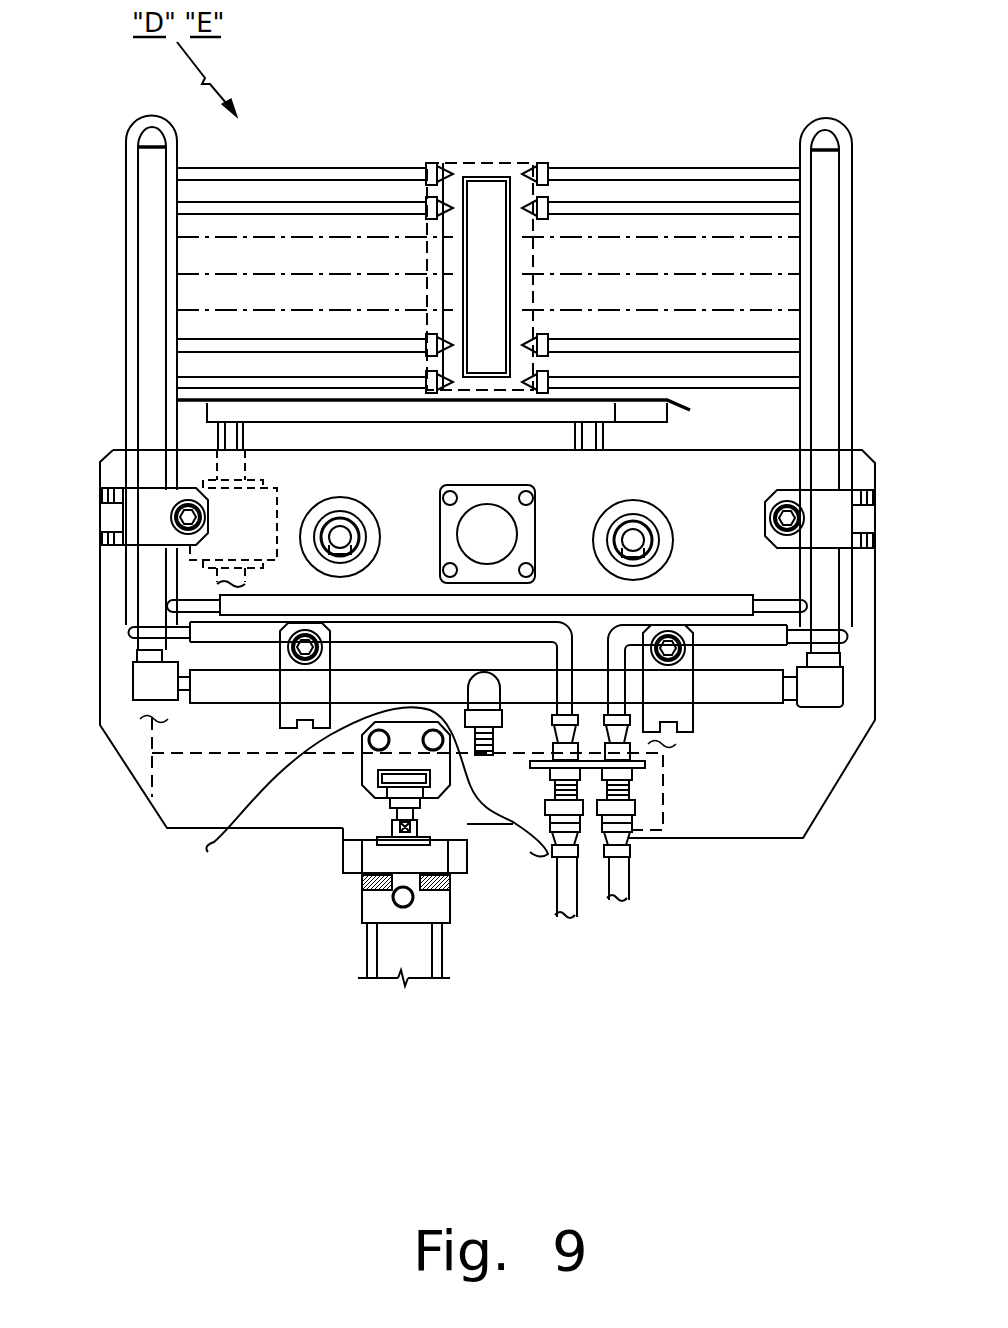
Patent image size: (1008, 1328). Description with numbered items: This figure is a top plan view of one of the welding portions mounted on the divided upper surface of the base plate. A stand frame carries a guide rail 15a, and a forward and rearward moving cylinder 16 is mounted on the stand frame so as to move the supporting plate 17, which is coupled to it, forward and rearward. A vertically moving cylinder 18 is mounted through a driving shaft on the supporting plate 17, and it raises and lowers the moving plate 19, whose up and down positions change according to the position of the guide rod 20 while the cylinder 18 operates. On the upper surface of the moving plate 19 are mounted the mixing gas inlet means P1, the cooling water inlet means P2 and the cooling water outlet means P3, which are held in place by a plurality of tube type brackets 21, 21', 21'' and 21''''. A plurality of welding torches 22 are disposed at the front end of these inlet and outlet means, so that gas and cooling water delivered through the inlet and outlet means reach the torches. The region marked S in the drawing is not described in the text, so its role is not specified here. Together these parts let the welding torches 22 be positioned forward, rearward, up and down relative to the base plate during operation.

The guide rail 15a is at (217, 442).
The forward and rearward moving cylinder 16 is at (415, 958).
The supporting plate 17 is at (328, 802).
The vertically moving cylinder 18 is at (447, 497).
The moving plate 19 is at (140, 758).
The guide rod 20 is at (635, 540).
The tube type bracket 21 is at (846, 563).
The tube type bracket 21' is at (778, 745).
The tube type bracket 21'' is at (267, 776).
The clamp block 21'''' is at (121, 581).
The welding torches 22 is at (652, 172).
The sensor panel S is at (482, 198).
The mixing gas inlet means P1 is at (493, 692).
The cooling water inlet means P2 is at (617, 900).
The cooling water outlet means P3 is at (565, 917).